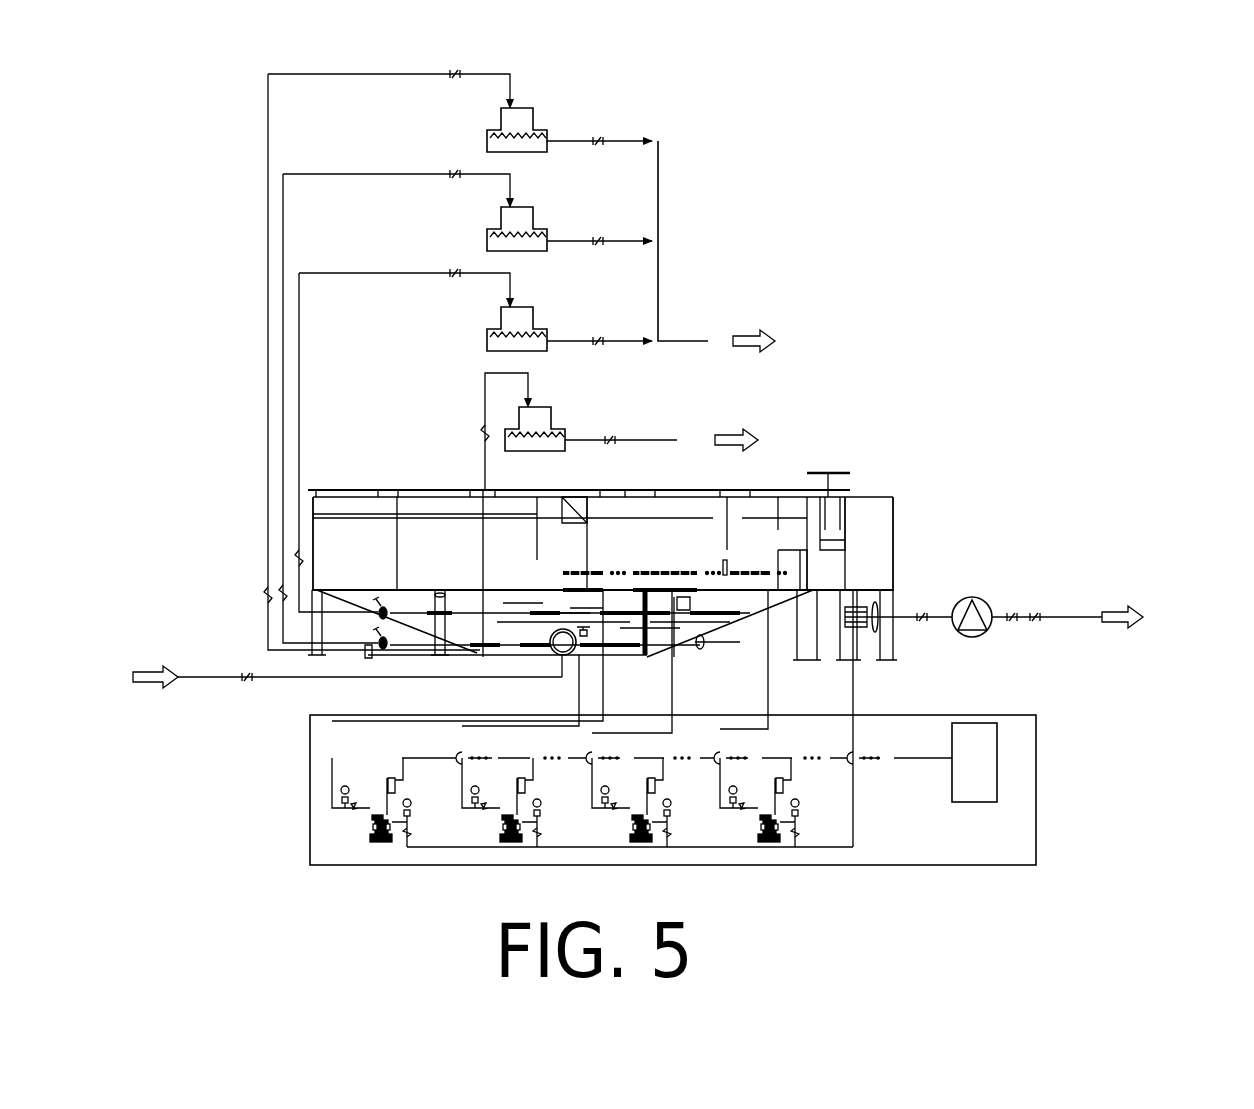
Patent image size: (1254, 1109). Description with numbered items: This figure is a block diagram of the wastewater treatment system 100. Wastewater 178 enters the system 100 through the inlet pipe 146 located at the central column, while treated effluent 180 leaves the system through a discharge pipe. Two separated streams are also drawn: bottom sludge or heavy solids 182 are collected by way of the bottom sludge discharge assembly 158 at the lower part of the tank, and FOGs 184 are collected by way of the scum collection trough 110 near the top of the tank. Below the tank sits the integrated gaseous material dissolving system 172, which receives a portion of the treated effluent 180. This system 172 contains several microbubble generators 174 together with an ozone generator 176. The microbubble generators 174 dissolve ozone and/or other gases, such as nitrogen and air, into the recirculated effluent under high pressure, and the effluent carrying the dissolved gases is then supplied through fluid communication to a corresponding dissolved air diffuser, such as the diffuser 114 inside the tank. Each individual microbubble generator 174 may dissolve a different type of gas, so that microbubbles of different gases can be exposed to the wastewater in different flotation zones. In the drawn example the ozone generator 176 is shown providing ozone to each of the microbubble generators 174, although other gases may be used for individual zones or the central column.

The system 100 is at (649, 561).
The scum collection trough 110 is at (470, 527).
The diffuser 114 is at (659, 564).
The inlet pipe 146 is at (567, 662).
The bottom sludge discharge assembly 158 is at (360, 630).
The integrated gaseous material dissolving system 172 is at (710, 744).
The microbubble generators 174 is at (361, 834).
The ozone generator 176 is at (941, 782).
The wastewater 178 is at (155, 704).
The treated effluent 180 is at (1115, 598).
The bottom sludge or heavy solids 182 is at (767, 310).
The FOGs 184 is at (740, 420).